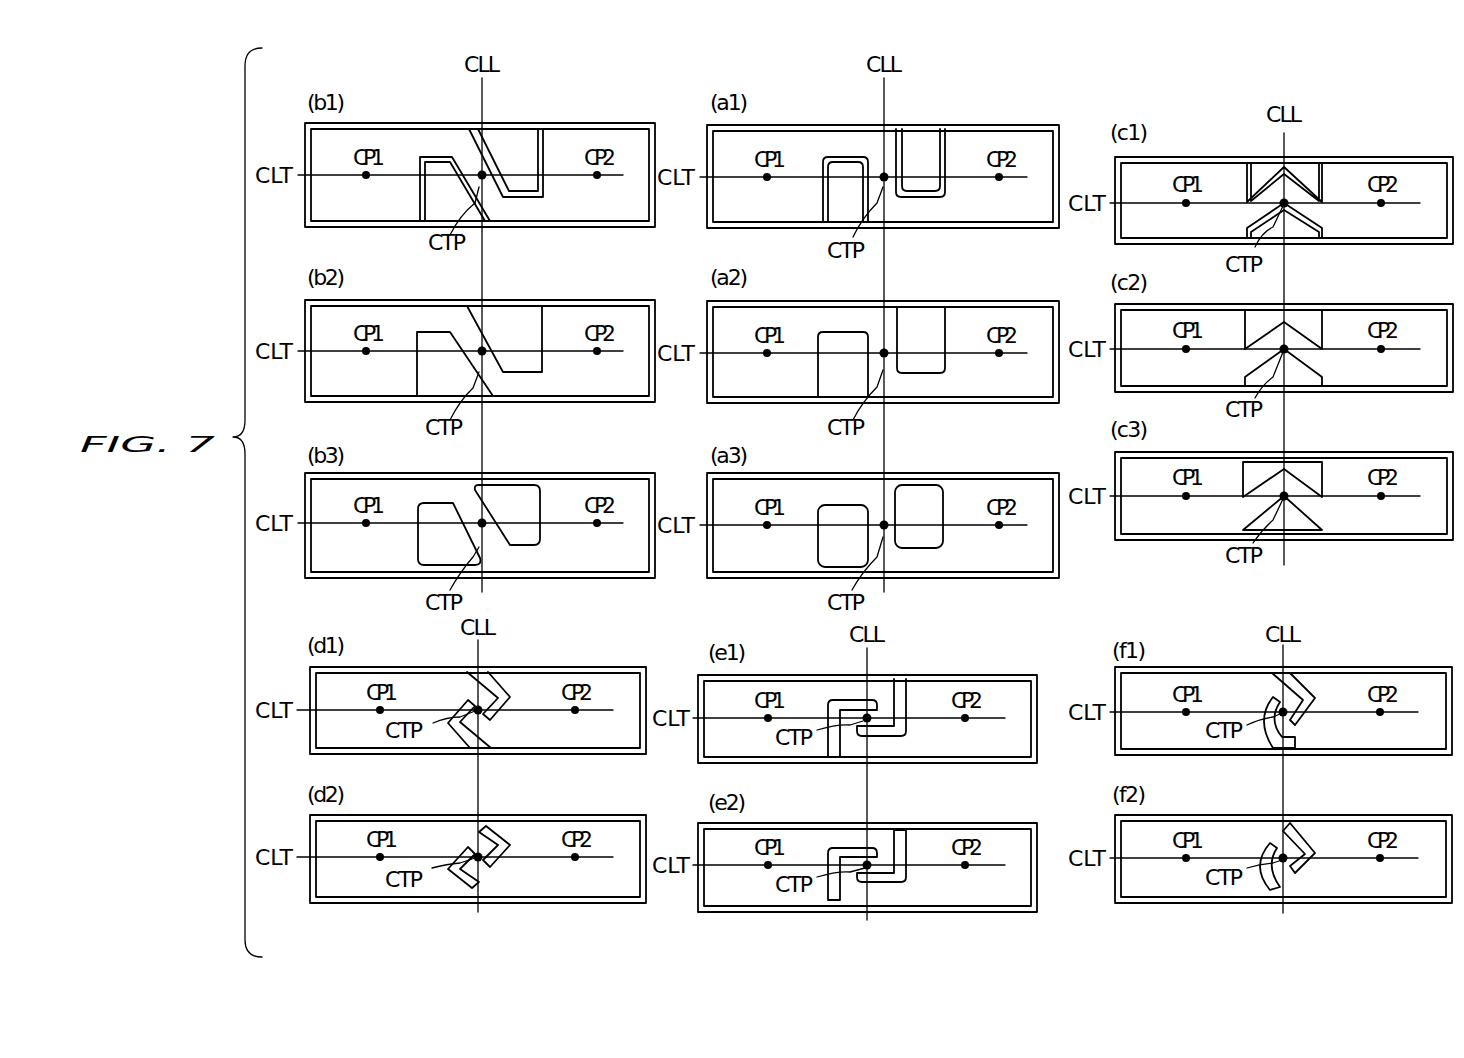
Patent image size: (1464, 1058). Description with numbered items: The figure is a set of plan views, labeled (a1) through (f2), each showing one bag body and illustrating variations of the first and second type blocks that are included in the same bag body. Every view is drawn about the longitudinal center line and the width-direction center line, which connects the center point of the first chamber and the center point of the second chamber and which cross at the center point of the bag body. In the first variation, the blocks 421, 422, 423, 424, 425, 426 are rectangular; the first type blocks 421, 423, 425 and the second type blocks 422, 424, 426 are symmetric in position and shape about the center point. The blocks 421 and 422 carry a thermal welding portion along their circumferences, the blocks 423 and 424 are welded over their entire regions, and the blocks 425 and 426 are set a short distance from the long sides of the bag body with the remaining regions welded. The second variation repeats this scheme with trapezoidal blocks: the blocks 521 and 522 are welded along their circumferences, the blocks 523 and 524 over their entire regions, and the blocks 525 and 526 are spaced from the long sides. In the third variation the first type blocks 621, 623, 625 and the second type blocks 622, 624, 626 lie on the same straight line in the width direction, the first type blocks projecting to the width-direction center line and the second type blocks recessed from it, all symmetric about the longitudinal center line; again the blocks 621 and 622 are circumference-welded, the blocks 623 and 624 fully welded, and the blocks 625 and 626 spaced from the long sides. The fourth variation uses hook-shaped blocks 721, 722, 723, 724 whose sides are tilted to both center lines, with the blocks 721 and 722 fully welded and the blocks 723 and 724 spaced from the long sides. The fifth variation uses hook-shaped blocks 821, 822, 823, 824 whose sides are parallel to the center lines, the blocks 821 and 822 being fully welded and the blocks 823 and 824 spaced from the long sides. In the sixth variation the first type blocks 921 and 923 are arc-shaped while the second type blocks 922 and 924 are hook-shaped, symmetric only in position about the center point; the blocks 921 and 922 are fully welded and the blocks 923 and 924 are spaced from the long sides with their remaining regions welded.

The first type block 421 is at (838, 192).
The second type block 422 is at (920, 140).
The first type block 423 is at (837, 373).
The second type block 424 is at (908, 318).
The first type block 425 is at (837, 543).
The second type block 426 is at (907, 490).
The first type block 521 is at (437, 193).
The second type block 522 is at (507, 140).
The first type block 523 is at (437, 369).
The second type block 524 is at (507, 317).
The first type block 525 is at (435, 543).
The second type block 526 is at (505, 490).
The first type block 621 is at (1307, 233).
The second type block 622 is at (1259, 163).
The first type block 623 is at (1306, 382).
The second type block 624 is at (1259, 322).
The first type block 625 is at (1305, 527).
The second type block 626 is at (1259, 467).
The first type block 721 is at (463, 738).
The second type block 722 is at (493, 685).
The first type block 723 is at (460, 887).
The second type block 724 is at (493, 830).
The first type block 821 is at (833, 753).
The second type block 822 is at (900, 697).
The first type block 823 is at (833, 900).
The second type block 824 is at (900, 840).
The first type block 921 is at (1275, 742).
The second type block 922 is at (1298, 695).
The first type block 923 is at (1275, 887).
The second type block 924 is at (1299, 830).